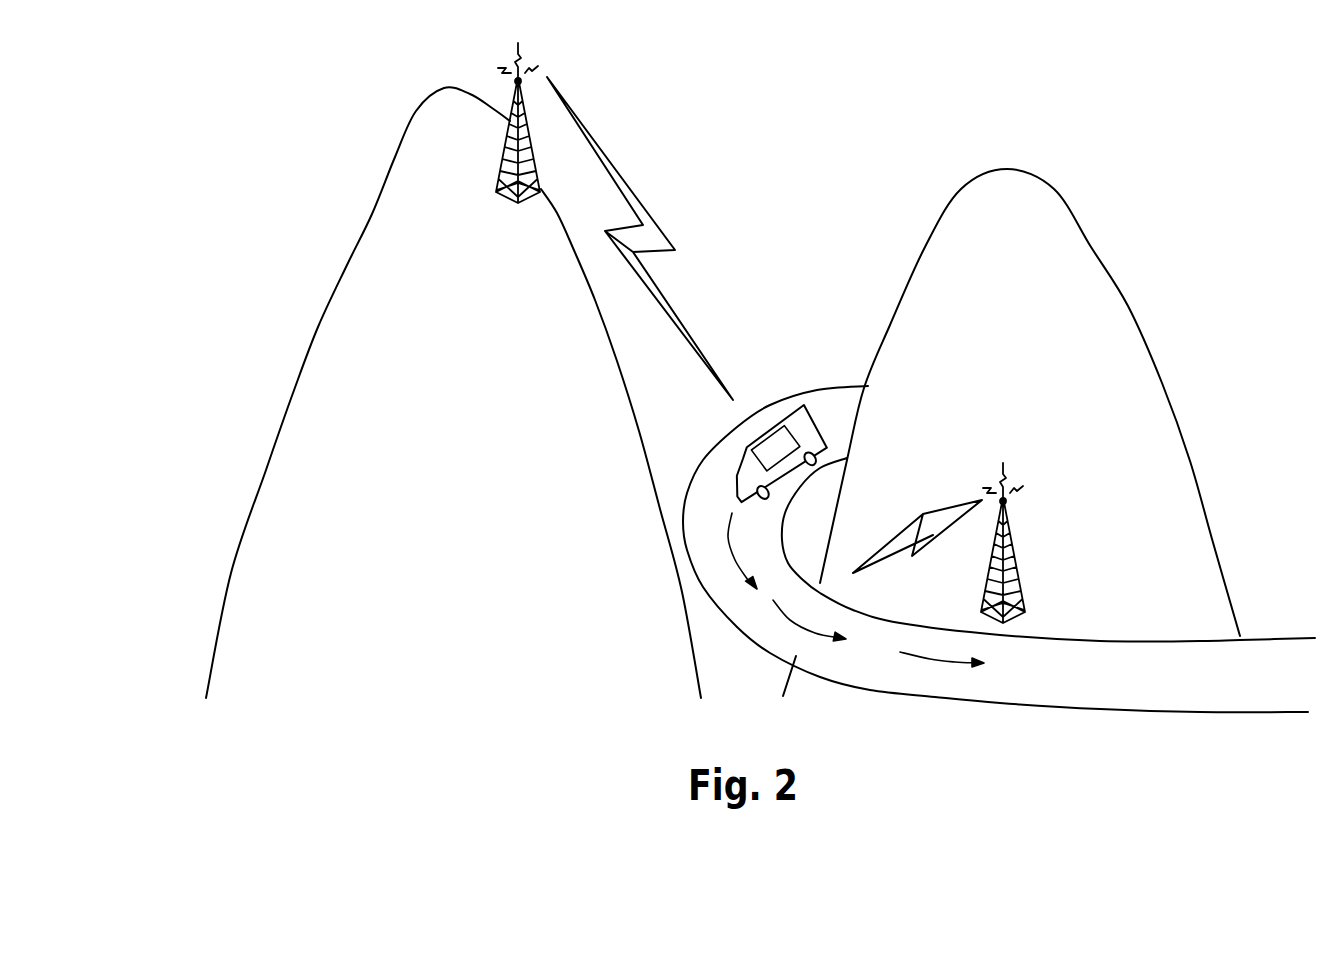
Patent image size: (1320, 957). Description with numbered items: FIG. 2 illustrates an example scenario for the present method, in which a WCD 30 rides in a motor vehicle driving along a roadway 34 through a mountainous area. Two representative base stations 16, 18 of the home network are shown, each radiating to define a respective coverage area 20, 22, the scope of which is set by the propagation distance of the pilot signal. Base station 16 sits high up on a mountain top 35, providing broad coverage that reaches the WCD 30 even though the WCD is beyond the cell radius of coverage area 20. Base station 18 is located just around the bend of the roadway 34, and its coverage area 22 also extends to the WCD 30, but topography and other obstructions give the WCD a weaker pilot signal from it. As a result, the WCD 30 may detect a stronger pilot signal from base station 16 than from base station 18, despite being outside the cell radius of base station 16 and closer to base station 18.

The base station 16 is at (501, 158).
The base station 18 is at (1018, 550).
The coverage area 20 is at (656, 220).
The coverage area 22 is at (914, 516).
The WCD 30 is at (773, 427).
The roadway 34 is at (1043, 705).
The mountain obstruction 35 is at (437, 126).